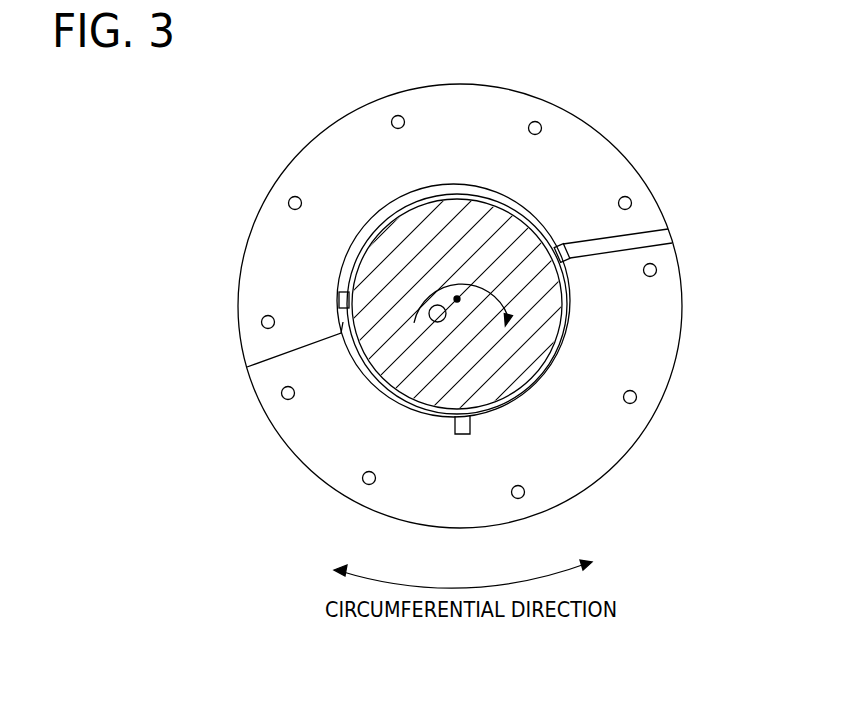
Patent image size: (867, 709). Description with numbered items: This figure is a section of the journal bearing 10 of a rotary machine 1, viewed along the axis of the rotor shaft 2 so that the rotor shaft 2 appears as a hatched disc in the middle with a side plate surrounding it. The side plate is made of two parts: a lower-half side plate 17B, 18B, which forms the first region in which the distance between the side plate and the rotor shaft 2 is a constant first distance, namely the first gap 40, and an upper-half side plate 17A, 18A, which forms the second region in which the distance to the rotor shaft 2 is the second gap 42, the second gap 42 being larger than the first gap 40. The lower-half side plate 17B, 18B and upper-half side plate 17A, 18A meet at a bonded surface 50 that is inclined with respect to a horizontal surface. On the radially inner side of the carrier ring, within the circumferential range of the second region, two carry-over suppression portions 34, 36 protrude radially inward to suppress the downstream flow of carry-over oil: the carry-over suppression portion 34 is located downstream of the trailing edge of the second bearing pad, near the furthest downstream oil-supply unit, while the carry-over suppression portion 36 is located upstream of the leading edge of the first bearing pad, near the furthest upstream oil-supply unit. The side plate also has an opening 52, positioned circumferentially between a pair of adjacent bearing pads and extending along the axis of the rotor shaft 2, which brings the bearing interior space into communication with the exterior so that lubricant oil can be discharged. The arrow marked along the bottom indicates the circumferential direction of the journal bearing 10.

The rotary machine 1 is at (790, 64).
The rotor shaft 2 is at (455, 223).
The journal bearing 10 is at (623, 142).
The upper-half side plate 18A is at (389, 212).
The upper-half side plate 17A is at (275, 229).
The lower-half side plate 18B is at (273, 424).
The lower-half side plate 17B is at (308, 445).
The carry-over suppression portion 34 is at (338, 302).
The carry-over suppression portion 36 is at (572, 245).
The first gap 40 is at (552, 368).
The second gap 42 is at (495, 197).
The bonded surface 50 is at (632, 246).
The opening 52 is at (461, 434).